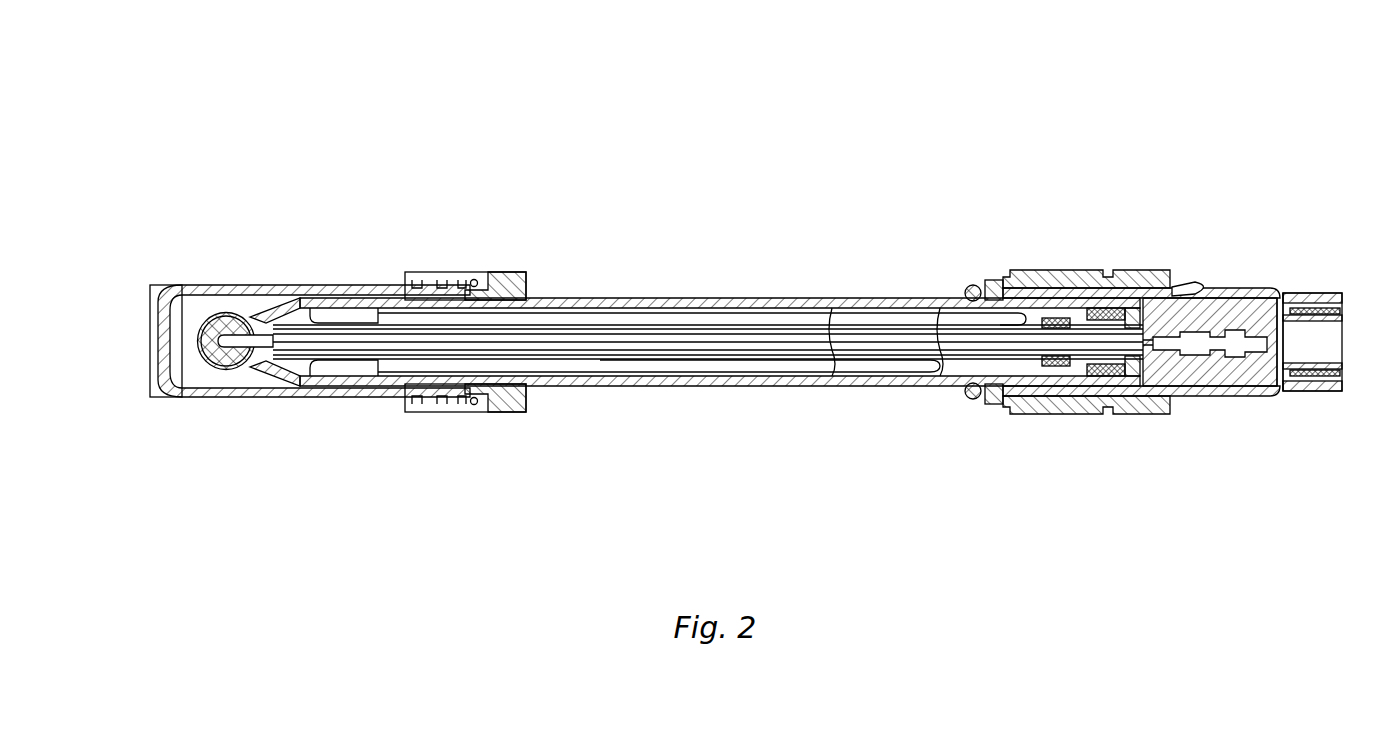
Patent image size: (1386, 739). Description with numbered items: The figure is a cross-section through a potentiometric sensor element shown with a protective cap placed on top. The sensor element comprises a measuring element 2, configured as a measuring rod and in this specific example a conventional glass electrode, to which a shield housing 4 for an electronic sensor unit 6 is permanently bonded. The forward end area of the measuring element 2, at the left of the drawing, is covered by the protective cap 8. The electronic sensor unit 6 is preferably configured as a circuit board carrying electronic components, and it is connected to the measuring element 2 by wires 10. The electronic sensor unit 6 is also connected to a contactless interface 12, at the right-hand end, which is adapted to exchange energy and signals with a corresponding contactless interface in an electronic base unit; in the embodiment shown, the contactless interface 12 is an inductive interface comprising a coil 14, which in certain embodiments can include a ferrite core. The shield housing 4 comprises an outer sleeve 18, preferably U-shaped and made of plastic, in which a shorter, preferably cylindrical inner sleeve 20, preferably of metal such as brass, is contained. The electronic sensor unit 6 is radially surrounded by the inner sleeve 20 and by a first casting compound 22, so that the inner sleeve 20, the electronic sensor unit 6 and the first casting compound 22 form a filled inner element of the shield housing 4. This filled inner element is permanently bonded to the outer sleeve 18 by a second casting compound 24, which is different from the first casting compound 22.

The measuring element 2 is at (645, 303).
The shield housing 4 is at (1187, 291).
The electronic sensor unit 6 is at (1208, 386).
The protective cap 8 is at (250, 290).
The wires 10 is at (1150, 315).
The contactless interface 12 is at (1338, 280).
The coil 14 is at (1303, 391).
The outer sleeve 18 is at (1238, 290).
The inner sleeve 20 is at (1243, 386).
The first casting compound 22 is at (1172, 396).
The second casting compound 24 is at (1287, 295).